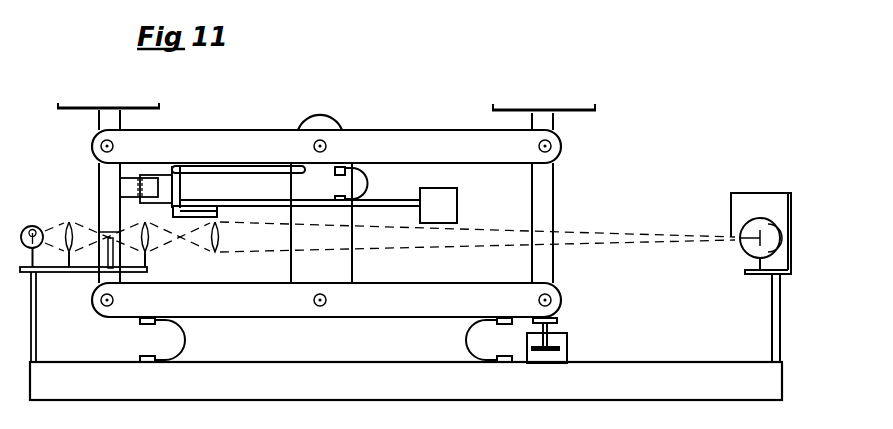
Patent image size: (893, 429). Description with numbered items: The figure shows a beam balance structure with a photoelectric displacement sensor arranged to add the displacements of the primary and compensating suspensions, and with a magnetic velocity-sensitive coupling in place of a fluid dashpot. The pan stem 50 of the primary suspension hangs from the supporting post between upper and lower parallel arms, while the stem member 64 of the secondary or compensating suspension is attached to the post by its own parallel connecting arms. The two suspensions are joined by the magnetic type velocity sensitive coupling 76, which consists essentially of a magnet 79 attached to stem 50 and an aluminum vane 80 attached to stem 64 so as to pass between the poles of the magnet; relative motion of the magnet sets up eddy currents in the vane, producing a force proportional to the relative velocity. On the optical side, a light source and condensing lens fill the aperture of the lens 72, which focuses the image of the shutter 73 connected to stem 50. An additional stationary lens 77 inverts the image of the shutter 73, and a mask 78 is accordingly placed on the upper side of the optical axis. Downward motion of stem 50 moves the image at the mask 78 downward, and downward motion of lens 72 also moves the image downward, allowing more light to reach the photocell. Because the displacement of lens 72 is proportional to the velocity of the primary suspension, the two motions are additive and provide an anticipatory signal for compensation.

The pan stem 50 is at (99, 185).
The stem member 64 is at (181, 187).
The lens 72 is at (216, 254).
The shutter 73 is at (102, 273).
The magnetic type velocity sensitive coupling 76 is at (152, 173).
The stationary lens 77 is at (151, 255).
The mask 78 is at (731, 212).
The magnet 79 is at (139, 181).
The aluminum vane 80 is at (158, 203).